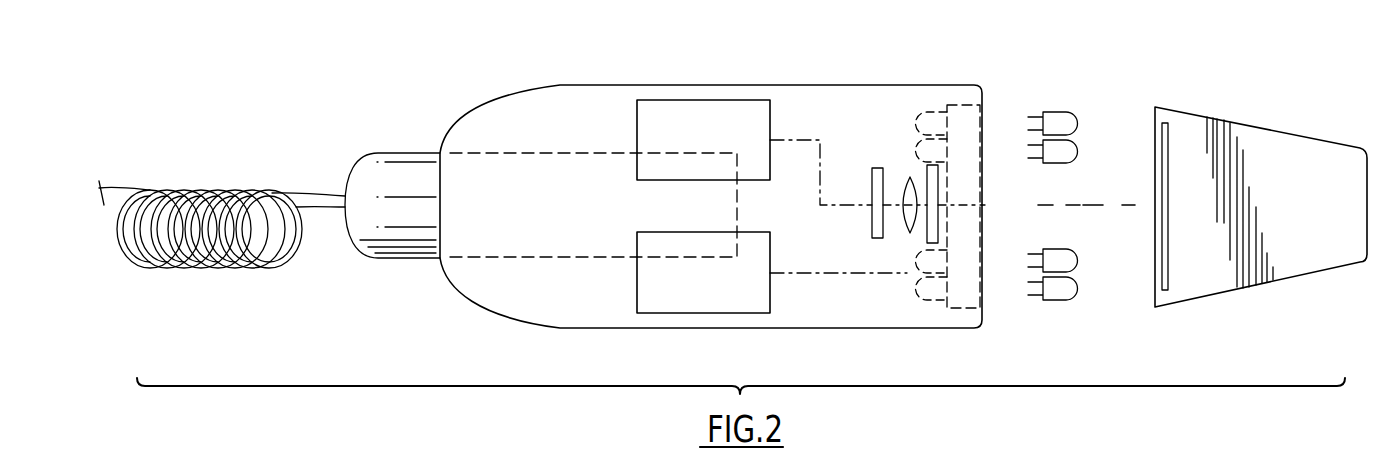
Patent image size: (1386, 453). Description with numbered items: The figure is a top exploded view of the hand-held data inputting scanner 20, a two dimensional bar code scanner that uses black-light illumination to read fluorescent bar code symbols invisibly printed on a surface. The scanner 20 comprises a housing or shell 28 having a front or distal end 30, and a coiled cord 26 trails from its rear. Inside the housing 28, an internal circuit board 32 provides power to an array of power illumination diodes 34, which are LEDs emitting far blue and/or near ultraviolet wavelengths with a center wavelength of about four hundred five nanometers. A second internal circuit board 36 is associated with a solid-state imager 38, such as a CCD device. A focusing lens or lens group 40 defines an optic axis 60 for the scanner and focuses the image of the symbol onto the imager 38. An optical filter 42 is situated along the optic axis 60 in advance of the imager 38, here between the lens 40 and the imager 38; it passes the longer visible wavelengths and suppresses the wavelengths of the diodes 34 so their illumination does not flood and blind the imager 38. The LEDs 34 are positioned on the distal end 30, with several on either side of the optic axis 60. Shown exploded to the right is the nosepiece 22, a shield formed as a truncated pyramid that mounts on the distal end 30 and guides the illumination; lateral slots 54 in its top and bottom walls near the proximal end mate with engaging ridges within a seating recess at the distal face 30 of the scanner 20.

The hand-held data inputting scanner 20 is at (620, 73).
The nosepiece 22 is at (1272, 108).
The coiled cord 26 is at (237, 265).
The housing or shell 28 is at (797, 85).
The front or distal end 30 is at (997, 310).
The internal circuit board 32 is at (637, 293).
The power illumination diodes 34 is at (1107, 72).
The second internal circuit board 36 is at (637, 120).
The solid-state imager 38 is at (878, 168).
The focusing lens or lens group 40 is at (905, 233).
The optical filter 42 is at (937, 222).
The lateral slots 54 is at (1162, 255).
The optic axis 60 is at (1068, 204).